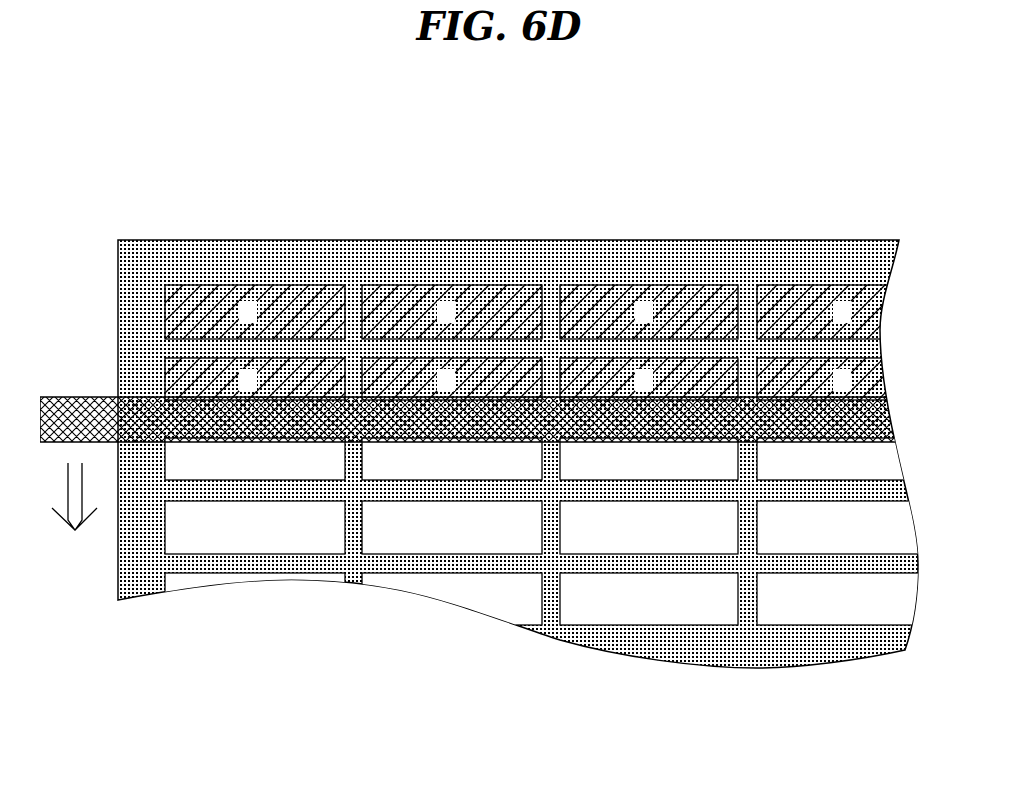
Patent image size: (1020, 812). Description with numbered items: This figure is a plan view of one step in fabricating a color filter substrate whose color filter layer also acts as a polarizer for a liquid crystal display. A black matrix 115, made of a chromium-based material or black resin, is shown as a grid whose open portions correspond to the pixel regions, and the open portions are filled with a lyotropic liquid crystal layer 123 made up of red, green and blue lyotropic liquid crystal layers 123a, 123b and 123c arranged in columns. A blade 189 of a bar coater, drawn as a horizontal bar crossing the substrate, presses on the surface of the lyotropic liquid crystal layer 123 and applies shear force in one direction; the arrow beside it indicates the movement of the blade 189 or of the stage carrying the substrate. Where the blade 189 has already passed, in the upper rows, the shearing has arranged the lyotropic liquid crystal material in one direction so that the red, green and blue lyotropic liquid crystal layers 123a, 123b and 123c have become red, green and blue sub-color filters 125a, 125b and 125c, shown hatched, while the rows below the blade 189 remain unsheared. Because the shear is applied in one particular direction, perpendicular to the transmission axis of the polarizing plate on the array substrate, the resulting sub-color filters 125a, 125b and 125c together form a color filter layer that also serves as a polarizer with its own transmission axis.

The black matrix 115 is at (747, 265).
The red sub-color filter 125a is at (204, 306).
The green sub-color filter 125b is at (402, 308).
The blue sub-color filter 125c is at (613, 308).
The blade 189 is at (66, 410).
The lyotropic liquid crystal layer 123 is at (551, 596).
The red lyotropic liquid crystal layer 123a is at (312, 528).
The green lyotropic liquid crystal layer 123b is at (487, 533).
The blue lyotropic liquid crystal layer 123c is at (592, 535).